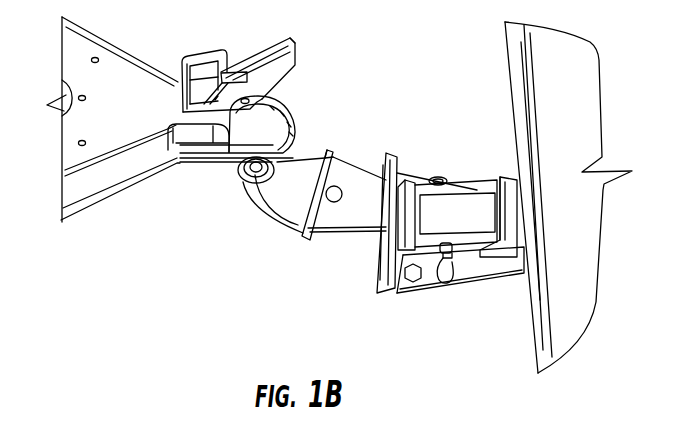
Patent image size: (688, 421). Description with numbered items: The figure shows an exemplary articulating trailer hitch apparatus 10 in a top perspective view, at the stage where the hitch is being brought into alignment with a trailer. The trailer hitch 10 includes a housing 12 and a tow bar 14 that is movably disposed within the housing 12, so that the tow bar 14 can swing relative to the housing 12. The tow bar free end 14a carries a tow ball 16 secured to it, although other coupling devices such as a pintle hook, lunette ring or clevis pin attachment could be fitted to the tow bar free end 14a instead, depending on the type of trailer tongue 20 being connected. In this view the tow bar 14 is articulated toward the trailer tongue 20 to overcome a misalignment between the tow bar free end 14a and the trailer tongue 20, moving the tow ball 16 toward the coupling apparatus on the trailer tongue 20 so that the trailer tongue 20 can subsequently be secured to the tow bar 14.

The articulating trailer hitch apparatus 10 is at (287, 297).
The housing 12 is at (400, 300).
The tow bar 14 is at (327, 150).
The tow bar free end 14a is at (243, 194).
The tow ball 16 is at (257, 184).
The trailer tongue 20 is at (282, 103).